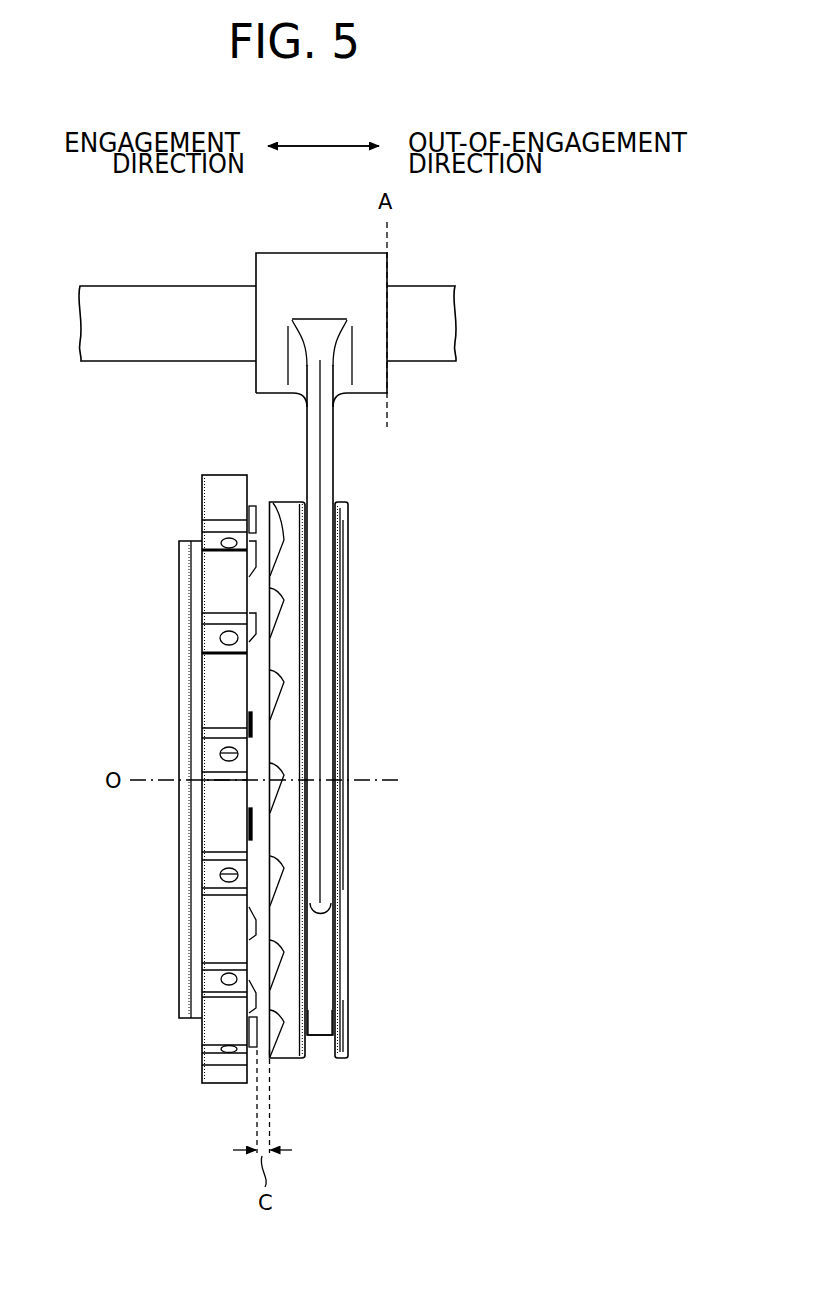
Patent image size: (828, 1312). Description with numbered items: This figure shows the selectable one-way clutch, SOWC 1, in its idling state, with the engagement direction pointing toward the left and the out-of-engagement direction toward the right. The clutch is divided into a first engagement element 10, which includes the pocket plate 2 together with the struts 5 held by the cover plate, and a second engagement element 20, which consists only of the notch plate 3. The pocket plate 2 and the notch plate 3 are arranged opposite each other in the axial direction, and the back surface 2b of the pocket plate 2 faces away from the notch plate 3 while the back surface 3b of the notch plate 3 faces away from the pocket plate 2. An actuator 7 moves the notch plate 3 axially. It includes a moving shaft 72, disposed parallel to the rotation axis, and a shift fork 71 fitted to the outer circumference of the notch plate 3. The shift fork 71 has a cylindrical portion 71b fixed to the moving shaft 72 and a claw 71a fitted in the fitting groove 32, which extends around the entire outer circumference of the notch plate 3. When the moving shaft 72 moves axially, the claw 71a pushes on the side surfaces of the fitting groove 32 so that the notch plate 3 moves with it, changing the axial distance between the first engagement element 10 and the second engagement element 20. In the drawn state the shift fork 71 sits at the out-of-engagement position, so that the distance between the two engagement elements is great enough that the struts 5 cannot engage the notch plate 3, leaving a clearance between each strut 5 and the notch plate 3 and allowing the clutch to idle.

The SOWC 1 is at (157, 1003).
The pocket plate 2 is at (212, 1089).
The back surface of the pocket plate 2b is at (180, 903).
The notch plate 3 is at (353, 955).
The back surface of the notch plate 3b is at (348, 903).
The strut 5 is at (258, 500).
The actuator 7 is at (470, 270).
The first engagement element 10 is at (196, 1052).
The second engagement element 20 is at (351, 1034).
The fitting groove 32 is at (317, 1038).
The shift fork 71 is at (336, 455).
The claw 71a is at (327, 688).
The cylindrical portion 71b is at (268, 378).
The moving shaft 72 is at (152, 298).